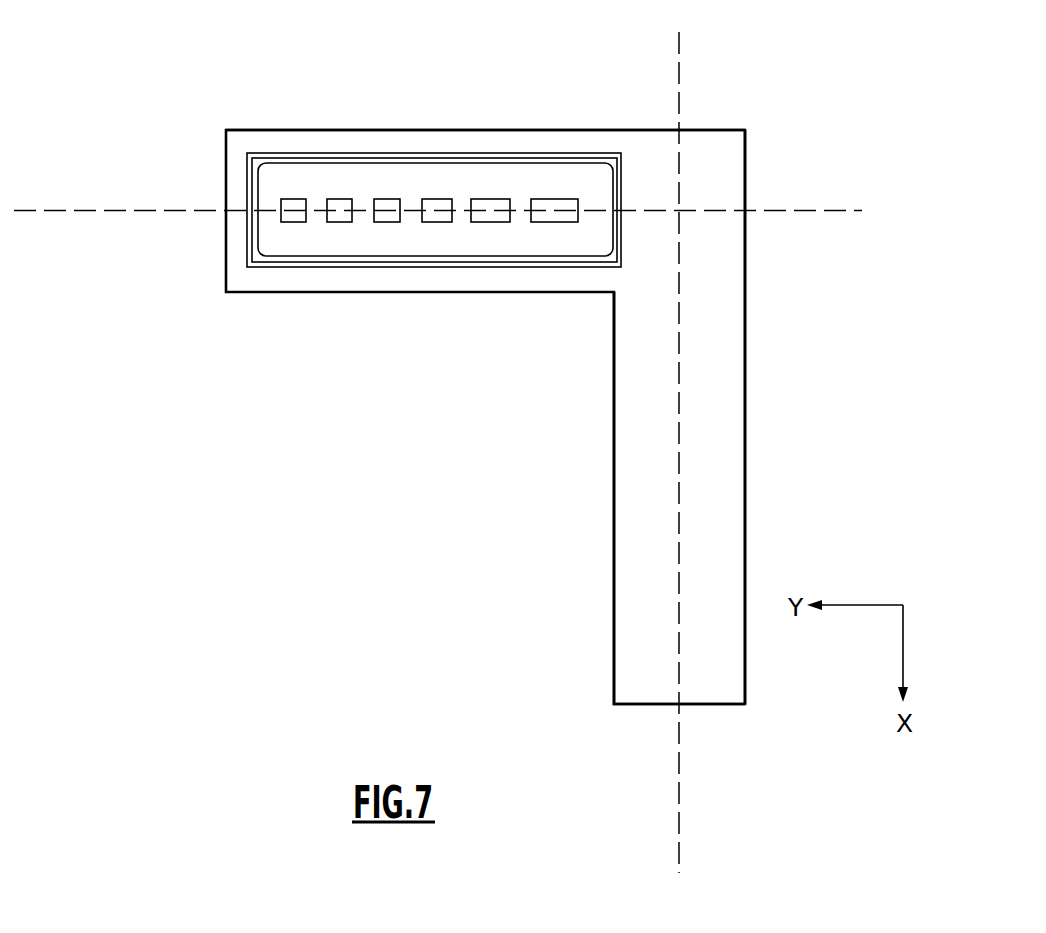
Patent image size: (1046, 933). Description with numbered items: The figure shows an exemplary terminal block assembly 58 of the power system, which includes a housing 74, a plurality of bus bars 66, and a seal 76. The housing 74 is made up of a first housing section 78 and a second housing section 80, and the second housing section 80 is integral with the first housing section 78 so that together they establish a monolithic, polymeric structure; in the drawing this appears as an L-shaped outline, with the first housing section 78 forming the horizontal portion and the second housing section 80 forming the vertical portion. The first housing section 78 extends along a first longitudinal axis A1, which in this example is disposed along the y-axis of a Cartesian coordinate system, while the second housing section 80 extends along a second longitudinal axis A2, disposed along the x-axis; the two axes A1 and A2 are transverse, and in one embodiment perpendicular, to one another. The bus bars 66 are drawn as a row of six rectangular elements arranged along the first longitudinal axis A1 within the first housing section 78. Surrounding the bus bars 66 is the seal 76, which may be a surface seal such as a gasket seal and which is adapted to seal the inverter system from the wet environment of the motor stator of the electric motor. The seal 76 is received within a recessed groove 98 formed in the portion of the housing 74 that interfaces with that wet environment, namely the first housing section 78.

The terminal block assembly 58 is at (531, 96).
The first housing section 78 is at (440, 140).
The housing 74 is at (756, 462).
The second housing section 80 is at (720, 348).
The recessed groove 98 is at (480, 267).
The seal 76 is at (410, 261).
The bus bars 66 is at (340, 188).
The first longitudinal axis A1 is at (97, 212).
The second longitudinal axis A2 is at (679, 832).